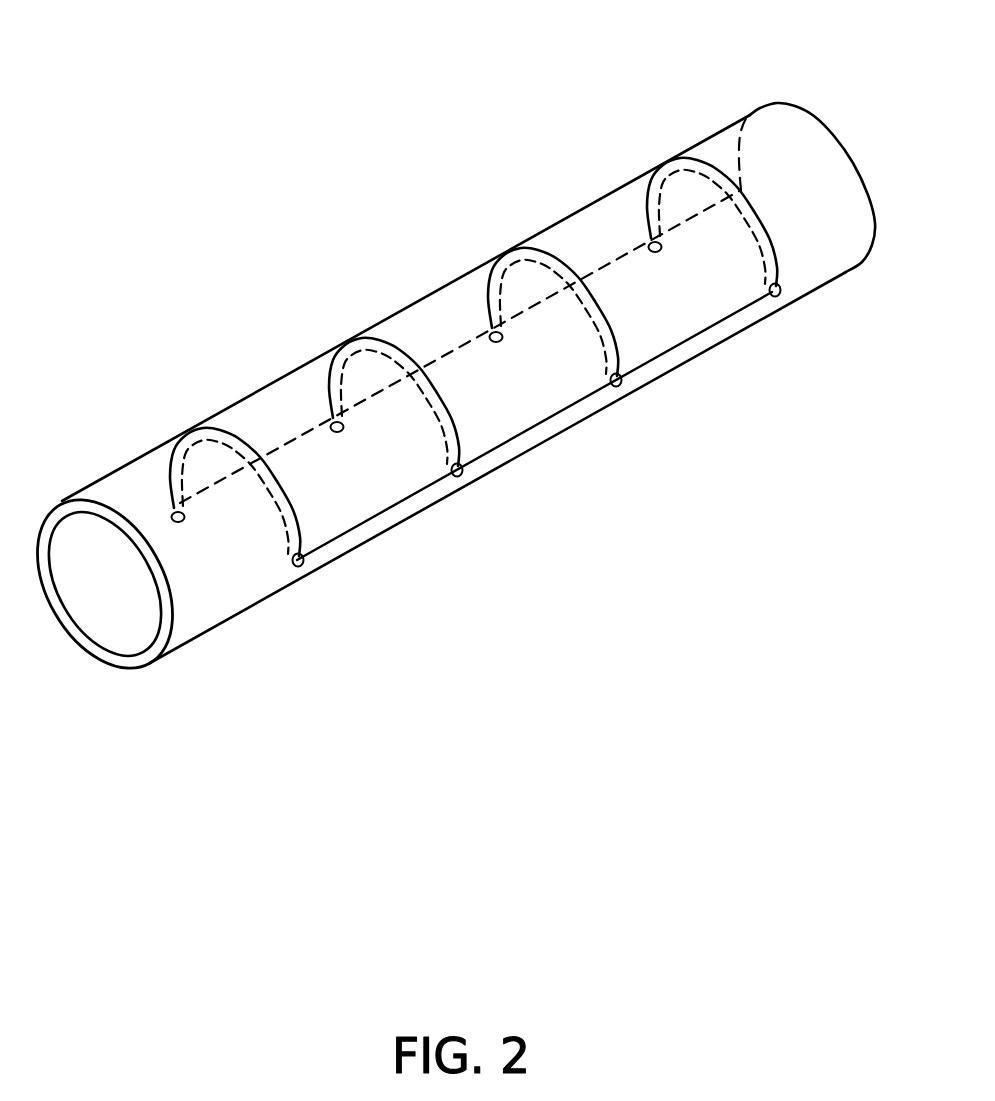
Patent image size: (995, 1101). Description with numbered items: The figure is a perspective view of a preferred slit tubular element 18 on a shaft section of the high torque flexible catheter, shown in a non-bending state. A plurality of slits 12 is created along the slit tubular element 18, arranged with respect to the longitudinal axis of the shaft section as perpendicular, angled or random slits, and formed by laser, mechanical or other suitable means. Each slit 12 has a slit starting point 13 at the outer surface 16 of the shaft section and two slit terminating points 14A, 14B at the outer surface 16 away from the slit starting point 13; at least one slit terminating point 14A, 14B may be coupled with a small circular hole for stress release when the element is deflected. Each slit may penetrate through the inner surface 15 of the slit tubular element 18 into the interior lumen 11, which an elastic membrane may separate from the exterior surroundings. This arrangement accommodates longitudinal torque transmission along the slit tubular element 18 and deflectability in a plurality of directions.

The interior lumen 11 is at (105, 486).
The slit 12 is at (465, 308).
The slit starting point 13 is at (473, 357).
The slit terminating point 14A is at (537, 454).
The slit terminating point 14B is at (417, 486).
The inner surface 15 is at (105, 638).
The outer surface 16 is at (454, 458).
The slit tubular element 18 is at (801, 142).